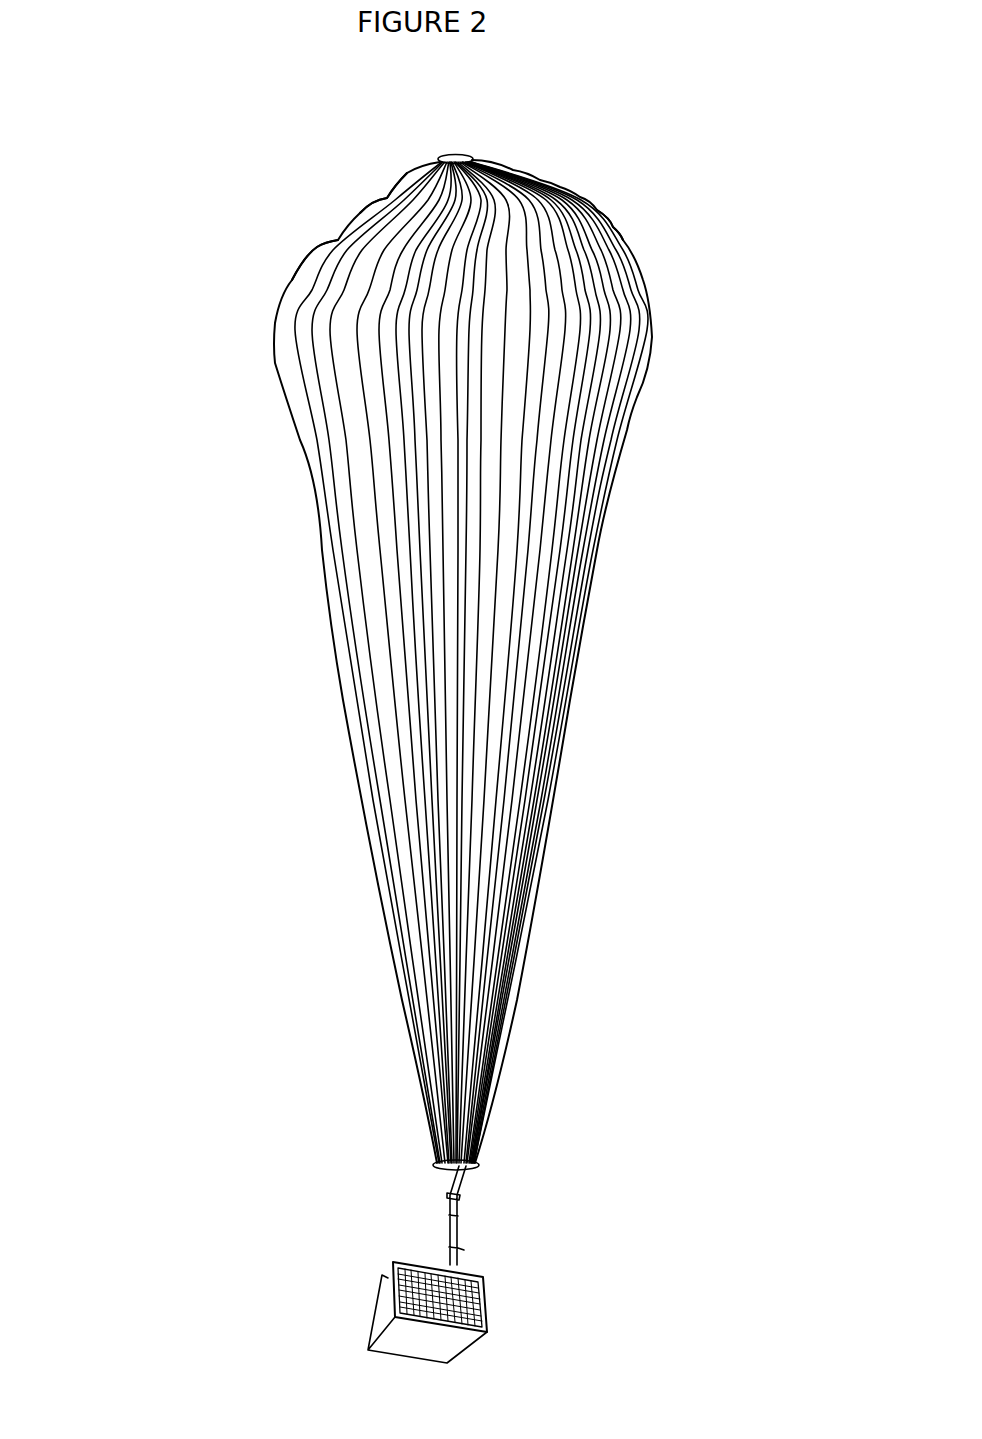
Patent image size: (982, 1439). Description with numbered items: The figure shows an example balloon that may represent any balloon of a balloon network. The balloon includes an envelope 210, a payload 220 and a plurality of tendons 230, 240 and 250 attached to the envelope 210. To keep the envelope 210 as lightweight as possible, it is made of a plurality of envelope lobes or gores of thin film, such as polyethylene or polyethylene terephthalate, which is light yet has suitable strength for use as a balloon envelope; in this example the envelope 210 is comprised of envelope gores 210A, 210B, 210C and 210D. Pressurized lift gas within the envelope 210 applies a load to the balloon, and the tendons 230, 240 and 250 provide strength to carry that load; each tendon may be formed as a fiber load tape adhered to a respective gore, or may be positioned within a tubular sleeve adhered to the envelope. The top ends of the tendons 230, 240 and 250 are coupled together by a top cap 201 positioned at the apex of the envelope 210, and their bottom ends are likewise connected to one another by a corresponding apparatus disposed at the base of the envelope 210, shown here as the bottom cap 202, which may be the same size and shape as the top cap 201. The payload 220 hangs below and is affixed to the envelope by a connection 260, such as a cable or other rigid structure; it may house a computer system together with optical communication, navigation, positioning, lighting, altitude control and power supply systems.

The top cap 201 is at (453, 153).
The bottom end fitting 202 is at (443, 1170).
The envelope 210 is at (441, 661).
The envelope gore 210A is at (348, 425).
The envelope gore 210B is at (377, 480).
The envelope gore 210C is at (580, 360).
The envelope gore 210D is at (617, 317).
The payload 220 is at (485, 1282).
The tendon 230 is at (338, 240).
The tendon 240 is at (397, 190).
The tendon 250 is at (620, 227).
The connection 260 is at (458, 1232).